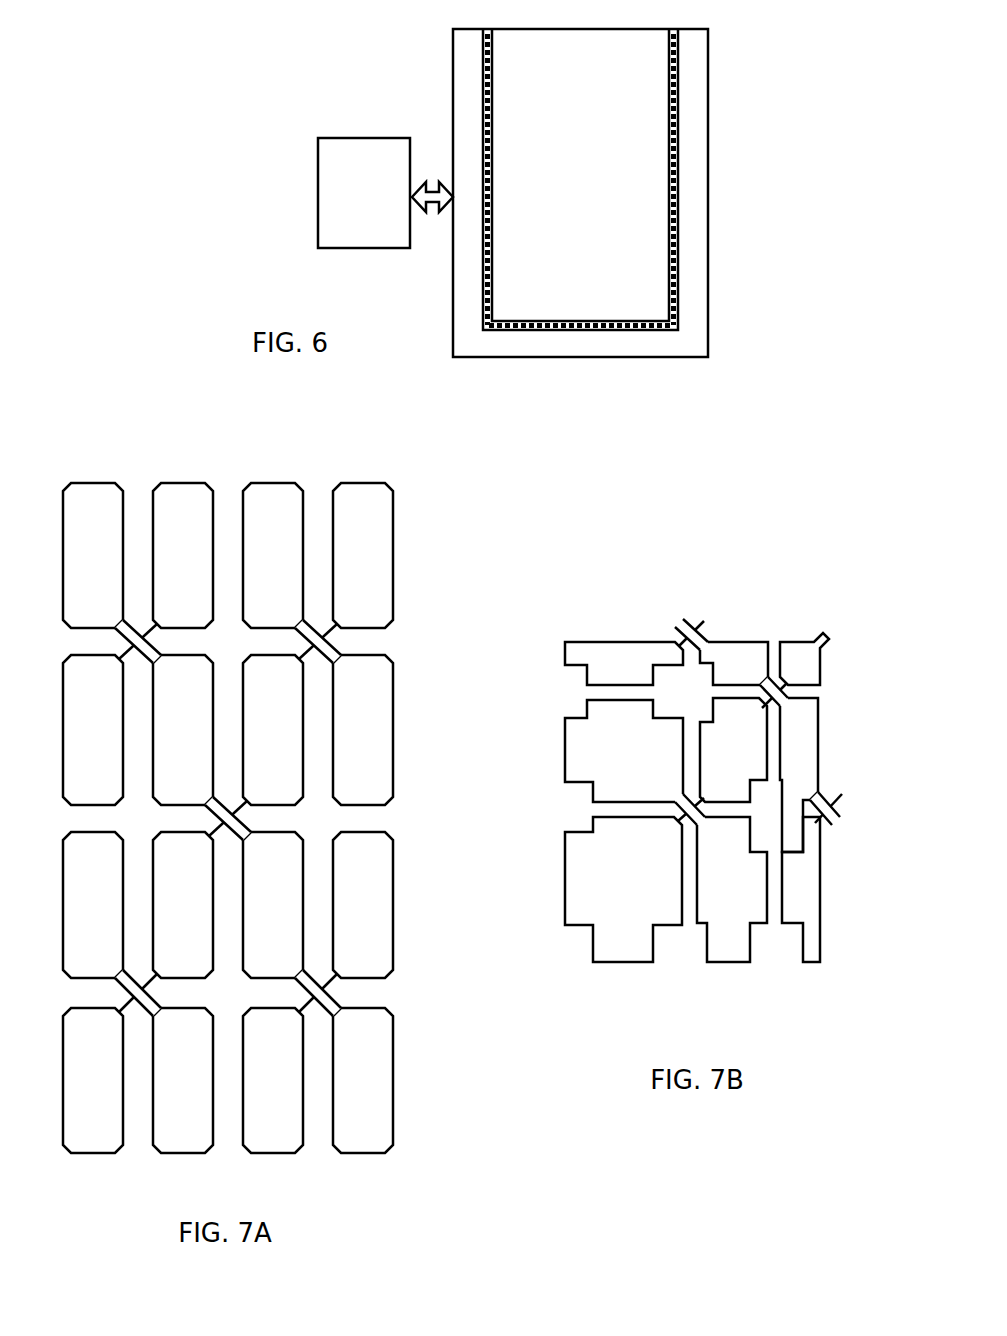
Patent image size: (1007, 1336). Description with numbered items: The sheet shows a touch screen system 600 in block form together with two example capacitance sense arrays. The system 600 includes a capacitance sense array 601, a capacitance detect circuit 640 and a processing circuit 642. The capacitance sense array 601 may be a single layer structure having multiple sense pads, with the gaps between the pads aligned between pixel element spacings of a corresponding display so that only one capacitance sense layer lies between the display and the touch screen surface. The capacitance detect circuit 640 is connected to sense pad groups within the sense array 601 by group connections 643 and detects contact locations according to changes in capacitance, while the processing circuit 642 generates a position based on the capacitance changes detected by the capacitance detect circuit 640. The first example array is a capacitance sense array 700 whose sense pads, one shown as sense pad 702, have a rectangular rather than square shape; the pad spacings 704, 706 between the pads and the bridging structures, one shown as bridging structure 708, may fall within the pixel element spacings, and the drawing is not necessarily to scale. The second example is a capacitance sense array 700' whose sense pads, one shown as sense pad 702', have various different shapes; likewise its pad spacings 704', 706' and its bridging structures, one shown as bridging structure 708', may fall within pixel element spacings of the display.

In FIG. 6, the touch screen system 600 is at (376, 64).
In FIG. 6, the capacitance sense array 601 is at (580, 175).
In FIG. 6, the capacitance detect circuit 640 is at (580, 193).
In FIG. 6, the processing circuit 642 is at (385, 193).
In FIG. 6, the group connections 643 is at (492, 242).
In FIG. 7A, the capacitance sense array 700 is at (152, 423).
In FIG. 7A, the sense pad 702 is at (228, 818).
In FIG. 7A, the pad spacing 704 is at (415, 992).
In FIG. 7A, the pad spacing 706 is at (318, 1189).
In FIG. 7A, the bridging structure 708 is at (179, 821).
In FIG. 7B, the capacitance sense array 700' is at (594, 581).
In FIG. 7B, the sense pad 702' is at (697, 797).
In FIG. 7B, the pad spacing 704' is at (863, 691).
In FIG. 7B, the pad spacing 706' is at (773, 999).
In FIG. 7B, the bridging structure 708' is at (678, 724).